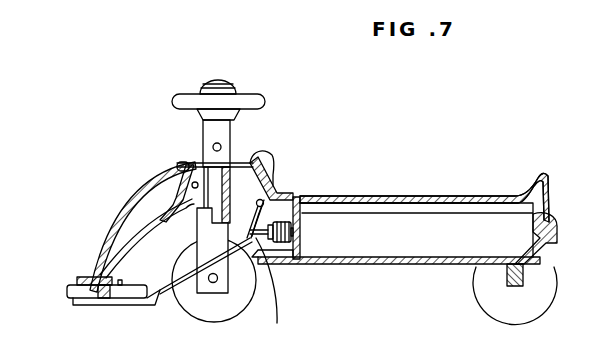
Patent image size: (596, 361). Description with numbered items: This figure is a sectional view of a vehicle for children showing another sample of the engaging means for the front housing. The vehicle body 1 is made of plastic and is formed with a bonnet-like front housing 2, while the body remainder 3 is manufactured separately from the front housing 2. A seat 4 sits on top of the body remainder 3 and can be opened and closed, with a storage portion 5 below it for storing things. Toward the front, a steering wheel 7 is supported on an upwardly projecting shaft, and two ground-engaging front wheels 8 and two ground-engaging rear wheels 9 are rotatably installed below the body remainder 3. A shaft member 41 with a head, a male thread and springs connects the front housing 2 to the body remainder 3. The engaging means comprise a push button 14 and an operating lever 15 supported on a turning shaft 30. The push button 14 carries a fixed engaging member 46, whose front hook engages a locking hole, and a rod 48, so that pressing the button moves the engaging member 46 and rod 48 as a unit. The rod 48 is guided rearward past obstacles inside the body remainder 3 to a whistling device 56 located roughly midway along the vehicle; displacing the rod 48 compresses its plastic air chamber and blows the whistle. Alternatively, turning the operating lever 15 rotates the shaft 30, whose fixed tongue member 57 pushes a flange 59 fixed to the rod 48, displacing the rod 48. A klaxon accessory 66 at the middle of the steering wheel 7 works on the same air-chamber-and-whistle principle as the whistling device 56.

The vehicle body 1 is at (306, 193).
The front housing 2 is at (118, 212).
The body remainder 3 is at (358, 265).
The seat 4 is at (441, 196).
The storage portion 5 is at (406, 254).
The steering wheel 7 is at (257, 101).
The front wheels 8 is at (213, 308).
The rear wheels 9 is at (526, 305).
The push button 14 is at (74, 299).
The operating lever 15 is at (268, 158).
The shaft 30 is at (279, 190).
The shaft member 41 is at (179, 163).
The engaging member 46 is at (98, 300).
The rod 48 is at (150, 298).
The whistling device 56 is at (297, 248).
The tongue member 57 is at (264, 155).
The flange 59 is at (265, 293).
The klaxon accessory 66 is at (214, 80).